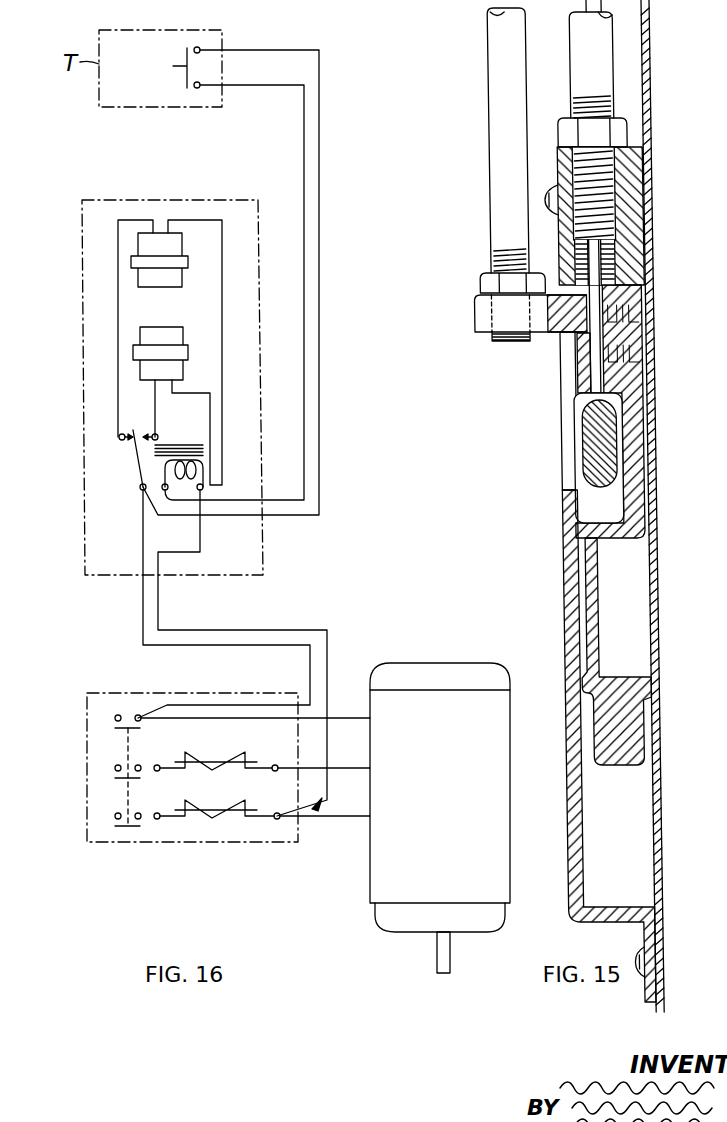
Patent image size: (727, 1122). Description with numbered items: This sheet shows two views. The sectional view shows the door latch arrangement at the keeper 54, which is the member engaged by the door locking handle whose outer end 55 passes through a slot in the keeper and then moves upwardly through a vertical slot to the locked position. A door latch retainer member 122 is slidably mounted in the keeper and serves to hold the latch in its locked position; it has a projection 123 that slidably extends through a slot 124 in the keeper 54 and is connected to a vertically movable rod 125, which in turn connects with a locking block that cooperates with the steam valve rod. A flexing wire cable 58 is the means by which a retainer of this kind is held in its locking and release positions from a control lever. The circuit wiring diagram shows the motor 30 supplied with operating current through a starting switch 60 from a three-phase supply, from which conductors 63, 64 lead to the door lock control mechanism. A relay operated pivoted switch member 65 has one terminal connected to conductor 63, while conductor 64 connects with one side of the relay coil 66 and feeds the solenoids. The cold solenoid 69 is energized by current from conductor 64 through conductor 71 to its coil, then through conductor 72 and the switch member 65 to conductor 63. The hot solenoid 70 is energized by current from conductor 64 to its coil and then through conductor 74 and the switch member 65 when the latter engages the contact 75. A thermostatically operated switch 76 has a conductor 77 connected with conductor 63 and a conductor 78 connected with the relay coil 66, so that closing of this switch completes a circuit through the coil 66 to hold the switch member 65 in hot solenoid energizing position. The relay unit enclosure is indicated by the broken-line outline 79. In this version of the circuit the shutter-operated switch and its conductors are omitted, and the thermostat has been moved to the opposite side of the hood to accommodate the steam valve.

In FIG. 16, the motor 30 is at (385, 665).
In FIG. 15, the keeper 54 is at (559, 527).
In FIG. 15, the outer end 55 is at (583, 445).
In FIG. 15, the flexing wire cable 58 is at (589, 376).
In FIG. 16, the starting switch 60 is at (221, 835).
In FIG. 16, the conductor 63 is at (207, 648).
In FIG. 16, the conductor 64 is at (207, 631).
In FIG. 16, the relay operated pivoted switch member 65 is at (137, 458).
In FIG. 16, the relay coil 66 is at (205, 468).
In FIG. 16, the cold solenoid 69 is at (188, 263).
In FIG. 16, the hot solenoid 70 is at (203, 343).
In FIG. 16, the conductor 71 is at (224, 297).
In FIG. 16, the conductor 72 is at (118, 297).
In FIG. 16, the conductor 74 is at (136, 419).
In FIG. 16, the contact 75 is at (158, 437).
In FIG. 16, the thermostatically operated switch 76 is at (187, 88).
In FIG. 16, the conductor 77 is at (324, 292).
In FIG. 16, the conductor 78 is at (306, 292).
In FIG. 16, the relay unit 79 is at (82, 357).
In FIG. 15, the door latch retainer member 122 is at (592, 522).
In FIG. 15, the projection 123 is at (543, 334).
In FIG. 15, the slot 124 is at (559, 365).
In FIG. 15, the vertically movable rod 125 is at (485, 192).